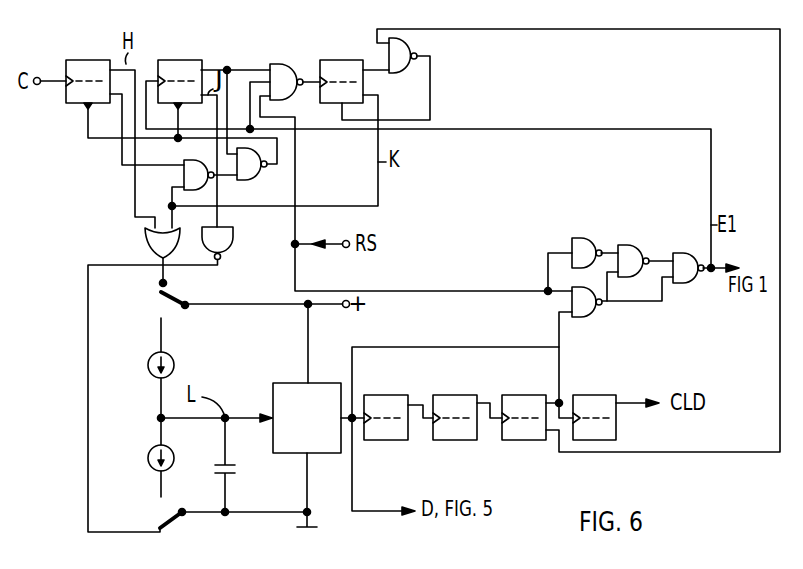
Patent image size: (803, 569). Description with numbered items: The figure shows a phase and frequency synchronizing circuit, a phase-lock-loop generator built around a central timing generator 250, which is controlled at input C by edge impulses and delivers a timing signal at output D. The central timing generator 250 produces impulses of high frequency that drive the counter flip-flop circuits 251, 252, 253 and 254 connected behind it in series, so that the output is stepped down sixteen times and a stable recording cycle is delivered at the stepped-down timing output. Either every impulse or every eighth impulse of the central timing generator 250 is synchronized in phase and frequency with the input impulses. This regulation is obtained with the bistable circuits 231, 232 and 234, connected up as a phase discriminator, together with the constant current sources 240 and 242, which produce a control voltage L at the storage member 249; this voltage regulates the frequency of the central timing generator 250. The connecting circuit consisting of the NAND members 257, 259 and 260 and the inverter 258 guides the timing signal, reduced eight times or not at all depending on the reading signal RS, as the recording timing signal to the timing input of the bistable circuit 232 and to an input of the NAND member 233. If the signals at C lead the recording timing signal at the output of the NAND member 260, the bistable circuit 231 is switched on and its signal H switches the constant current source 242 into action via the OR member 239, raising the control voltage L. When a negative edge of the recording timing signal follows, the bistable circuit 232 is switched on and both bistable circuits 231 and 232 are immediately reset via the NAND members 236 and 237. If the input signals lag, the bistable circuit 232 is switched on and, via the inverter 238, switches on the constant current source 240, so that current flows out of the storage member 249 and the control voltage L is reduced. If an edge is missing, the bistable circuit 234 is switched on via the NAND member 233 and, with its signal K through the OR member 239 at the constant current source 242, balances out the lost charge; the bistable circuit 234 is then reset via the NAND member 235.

The bistable circuit 231 is at (84, 63).
The bistable circuit 232 is at (182, 63).
The NAND member 233 is at (280, 58).
The bistable circuit 234 is at (335, 63).
The NAND member 235 is at (405, 47).
The NAND member 236 is at (181, 175).
The NAND member 237 is at (256, 178).
The inverter 238 is at (240, 230).
The OR member 239 is at (150, 242).
The constant current source 240 is at (152, 455).
The constant current source 242 is at (152, 354).
The storage member 249 is at (243, 470).
The central timing generator 250 is at (291, 383).
The counter flip-flop circuit 251 is at (382, 398).
The counter flip-flop circuit 252 is at (455, 398).
The counter flip-flop circuit 253 is at (524, 398).
The counter flip-flop circuit 254 is at (596, 398).
The NAND member 257 is at (568, 302).
The inverter 258 is at (580, 237).
The NAND member 259 is at (633, 250).
The NAND member 260 is at (687, 283).